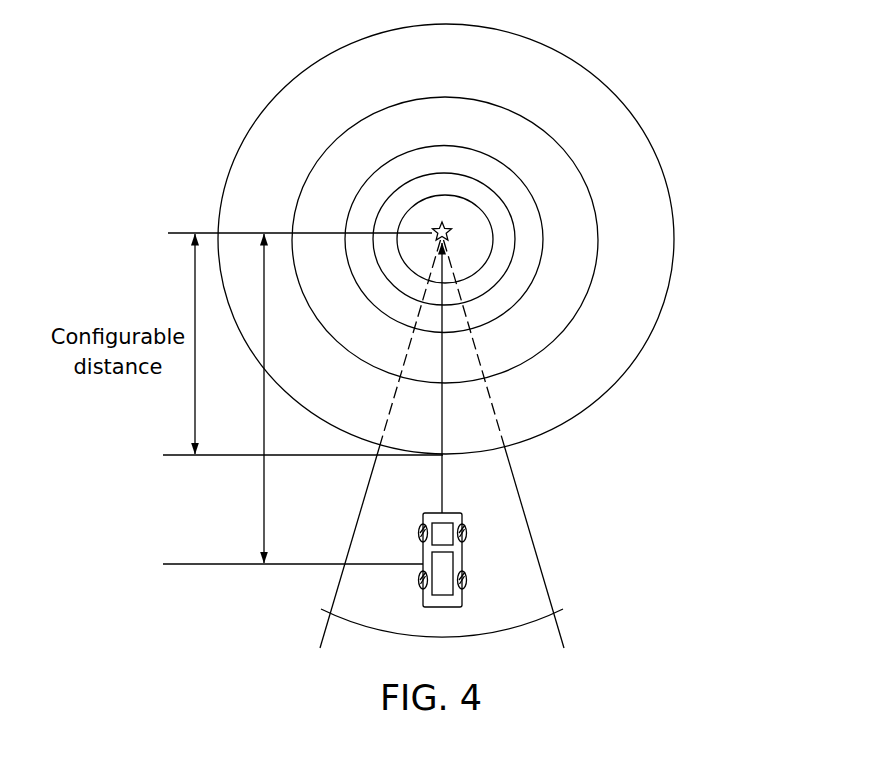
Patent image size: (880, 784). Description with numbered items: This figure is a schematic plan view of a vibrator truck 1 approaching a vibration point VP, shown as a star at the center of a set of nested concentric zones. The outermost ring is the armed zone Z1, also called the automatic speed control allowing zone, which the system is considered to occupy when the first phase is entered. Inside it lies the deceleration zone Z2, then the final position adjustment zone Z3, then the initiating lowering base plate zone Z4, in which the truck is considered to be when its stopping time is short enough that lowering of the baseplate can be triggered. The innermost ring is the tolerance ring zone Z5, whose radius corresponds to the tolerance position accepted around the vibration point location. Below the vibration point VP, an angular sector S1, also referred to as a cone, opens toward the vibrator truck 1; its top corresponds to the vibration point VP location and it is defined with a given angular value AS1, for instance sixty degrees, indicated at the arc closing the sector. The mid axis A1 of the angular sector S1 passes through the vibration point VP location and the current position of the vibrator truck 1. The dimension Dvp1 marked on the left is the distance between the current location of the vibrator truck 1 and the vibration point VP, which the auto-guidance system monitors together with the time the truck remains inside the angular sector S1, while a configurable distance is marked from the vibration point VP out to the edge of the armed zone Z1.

The vibration point VP is at (433, 230).
The armed zone Z1 is at (473, 420).
The deceleration zone Z2 is at (463, 363).
The final position adjustment zone Z3 is at (478, 312).
The initiating lowering base plate zone Z4 is at (543, 239).
The tolerance ring zone Z5 is at (456, 192).
The mid axis A1 is at (453, 494).
The angular sector S1 is at (544, 540).
The angular value AS1 is at (521, 631).
The vibrator truck 1 is at (411, 550).
The distance to vibration point Dvp1 is at (258, 514).